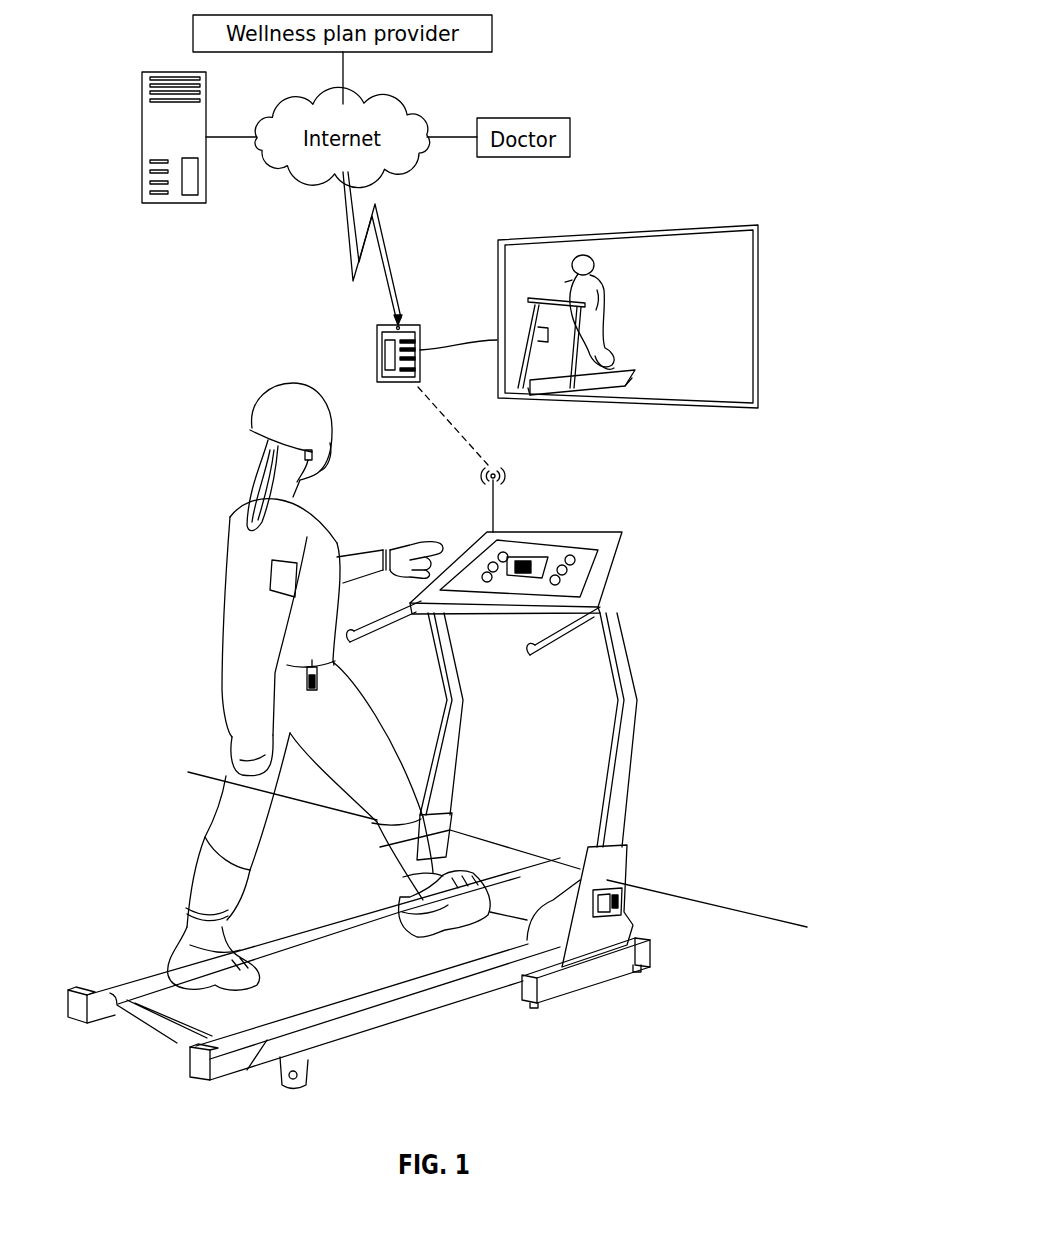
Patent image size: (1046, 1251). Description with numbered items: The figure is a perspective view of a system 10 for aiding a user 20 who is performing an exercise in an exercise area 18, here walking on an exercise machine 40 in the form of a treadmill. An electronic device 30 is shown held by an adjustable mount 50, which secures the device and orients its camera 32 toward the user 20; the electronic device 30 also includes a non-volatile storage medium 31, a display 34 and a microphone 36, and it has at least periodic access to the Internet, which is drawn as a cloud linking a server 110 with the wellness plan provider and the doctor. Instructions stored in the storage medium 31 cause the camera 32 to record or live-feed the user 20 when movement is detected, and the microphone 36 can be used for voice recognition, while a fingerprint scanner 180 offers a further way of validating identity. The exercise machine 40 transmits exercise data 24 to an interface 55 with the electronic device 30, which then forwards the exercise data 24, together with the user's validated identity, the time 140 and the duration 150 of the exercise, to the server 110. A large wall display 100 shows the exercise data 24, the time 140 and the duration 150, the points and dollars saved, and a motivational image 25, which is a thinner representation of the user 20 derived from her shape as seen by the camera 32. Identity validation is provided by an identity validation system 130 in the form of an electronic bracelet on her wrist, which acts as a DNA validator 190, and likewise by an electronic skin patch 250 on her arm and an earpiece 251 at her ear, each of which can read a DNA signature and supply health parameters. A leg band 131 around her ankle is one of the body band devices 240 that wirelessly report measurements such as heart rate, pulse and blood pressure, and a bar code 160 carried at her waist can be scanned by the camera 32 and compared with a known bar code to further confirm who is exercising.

The system 10 is at (214, 261).
The exercise area 18 is at (437, 778).
The user 20 is at (304, 686).
The exercise data 24 is at (697, 268).
The motivational image 25 is at (576, 238).
The electronic device 30 is at (394, 340).
The non-volatile storage medium 31 is at (415, 370).
The camera 32 is at (400, 316).
The display 34 is at (415, 352).
The microphone 36 is at (417, 322).
The exercise machine 40 is at (597, 537).
The adjustable mount 50 is at (400, 383).
The interface 55 is at (463, 438).
The display 100 is at (670, 312).
The server 110 is at (142, 137).
The identity validation system 130 is at (383, 551).
The leg band 131 is at (188, 910).
The time 140 is at (760, 420).
The duration 150 is at (735, 329).
The bar code 160 is at (323, 673).
The fingerprint scanner 180 is at (392, 353).
The DNA validator 190 is at (388, 546).
The body band devices 240 is at (388, 557).
The electronic skin patch 250 is at (280, 570).
The earpiece 251 is at (277, 444).